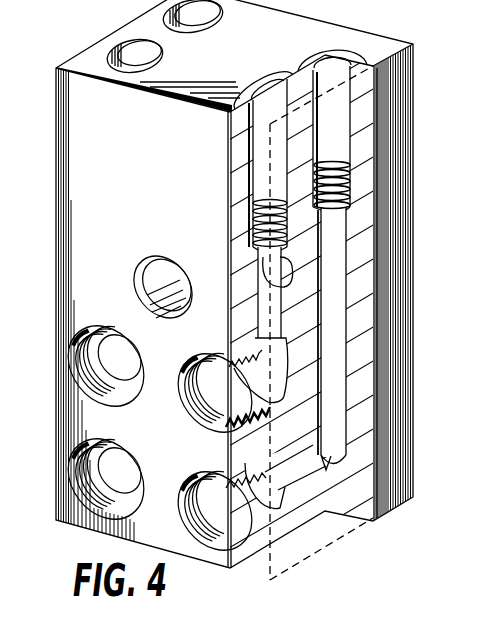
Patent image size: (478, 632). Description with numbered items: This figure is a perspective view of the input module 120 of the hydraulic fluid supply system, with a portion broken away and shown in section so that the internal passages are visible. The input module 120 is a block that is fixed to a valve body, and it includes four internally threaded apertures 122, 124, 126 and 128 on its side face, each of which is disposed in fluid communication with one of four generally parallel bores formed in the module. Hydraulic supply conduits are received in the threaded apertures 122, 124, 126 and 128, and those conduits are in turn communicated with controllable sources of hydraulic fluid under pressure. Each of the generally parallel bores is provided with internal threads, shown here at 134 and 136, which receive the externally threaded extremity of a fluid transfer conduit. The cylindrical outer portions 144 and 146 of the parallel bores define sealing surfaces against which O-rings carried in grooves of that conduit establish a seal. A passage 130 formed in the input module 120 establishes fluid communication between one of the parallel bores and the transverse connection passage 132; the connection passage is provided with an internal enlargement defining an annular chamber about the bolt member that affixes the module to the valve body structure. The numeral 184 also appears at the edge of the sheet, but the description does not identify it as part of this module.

The input module 120 is at (147, 161).
The internally threaded aperture 122 is at (97, 370).
The internally threaded aperture 124 is at (93, 478).
The internally threaded aperture 126 is at (205, 412).
The internally threaded aperture 128 is at (236, 473).
The passage 130 is at (275, 268).
The transverse connection passage 132 is at (143, 270).
The internal threads 134 is at (255, 210).
The internal threads 136 is at (348, 196).
The cylindrical outer portion 144 is at (255, 160).
The cylindrical outer portion 146 is at (352, 105).
The element 184 is at (461, 367).